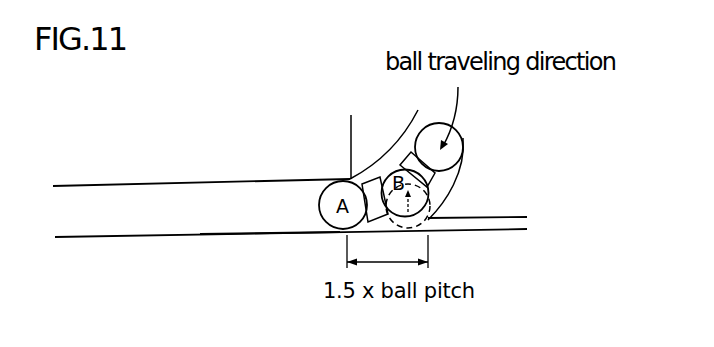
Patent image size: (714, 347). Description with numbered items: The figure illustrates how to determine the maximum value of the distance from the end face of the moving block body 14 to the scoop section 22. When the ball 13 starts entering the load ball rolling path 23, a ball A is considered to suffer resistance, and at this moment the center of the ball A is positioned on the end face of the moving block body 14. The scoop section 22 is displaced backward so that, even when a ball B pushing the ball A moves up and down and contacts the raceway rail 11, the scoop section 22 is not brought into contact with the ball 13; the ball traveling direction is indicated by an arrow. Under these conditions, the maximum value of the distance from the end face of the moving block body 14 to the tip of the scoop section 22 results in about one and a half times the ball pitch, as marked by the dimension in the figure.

The raceway rail 11 is at (215, 245).
The ball 13 is at (455, 141).
The moving block body 14 is at (266, 152).
The scoop section 22 is at (446, 213).
The load ball rolling path 23 is at (264, 232).